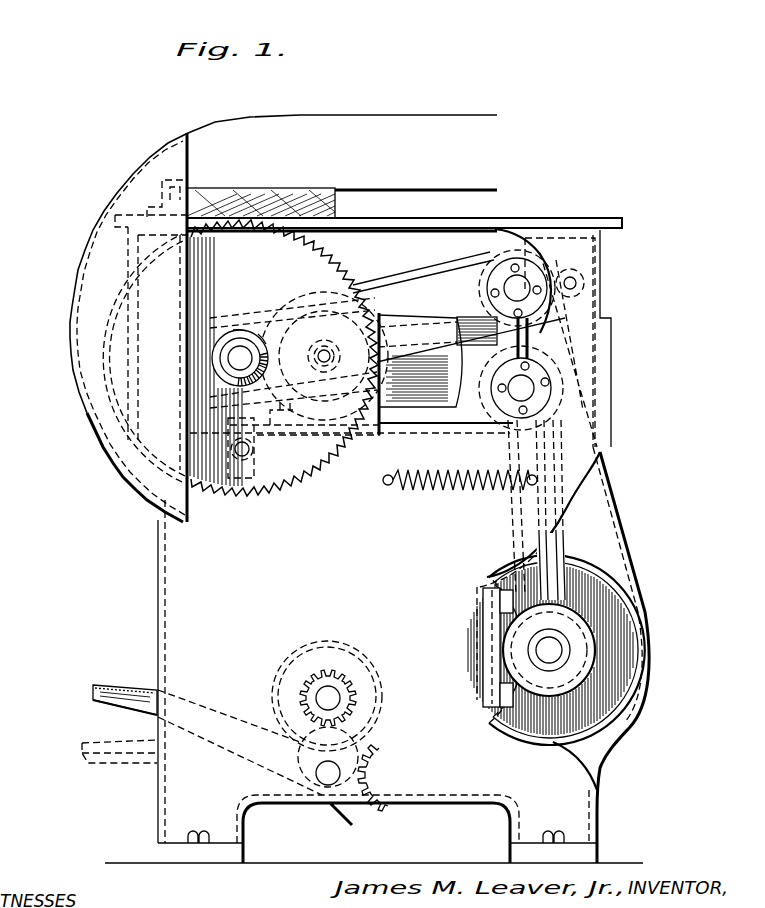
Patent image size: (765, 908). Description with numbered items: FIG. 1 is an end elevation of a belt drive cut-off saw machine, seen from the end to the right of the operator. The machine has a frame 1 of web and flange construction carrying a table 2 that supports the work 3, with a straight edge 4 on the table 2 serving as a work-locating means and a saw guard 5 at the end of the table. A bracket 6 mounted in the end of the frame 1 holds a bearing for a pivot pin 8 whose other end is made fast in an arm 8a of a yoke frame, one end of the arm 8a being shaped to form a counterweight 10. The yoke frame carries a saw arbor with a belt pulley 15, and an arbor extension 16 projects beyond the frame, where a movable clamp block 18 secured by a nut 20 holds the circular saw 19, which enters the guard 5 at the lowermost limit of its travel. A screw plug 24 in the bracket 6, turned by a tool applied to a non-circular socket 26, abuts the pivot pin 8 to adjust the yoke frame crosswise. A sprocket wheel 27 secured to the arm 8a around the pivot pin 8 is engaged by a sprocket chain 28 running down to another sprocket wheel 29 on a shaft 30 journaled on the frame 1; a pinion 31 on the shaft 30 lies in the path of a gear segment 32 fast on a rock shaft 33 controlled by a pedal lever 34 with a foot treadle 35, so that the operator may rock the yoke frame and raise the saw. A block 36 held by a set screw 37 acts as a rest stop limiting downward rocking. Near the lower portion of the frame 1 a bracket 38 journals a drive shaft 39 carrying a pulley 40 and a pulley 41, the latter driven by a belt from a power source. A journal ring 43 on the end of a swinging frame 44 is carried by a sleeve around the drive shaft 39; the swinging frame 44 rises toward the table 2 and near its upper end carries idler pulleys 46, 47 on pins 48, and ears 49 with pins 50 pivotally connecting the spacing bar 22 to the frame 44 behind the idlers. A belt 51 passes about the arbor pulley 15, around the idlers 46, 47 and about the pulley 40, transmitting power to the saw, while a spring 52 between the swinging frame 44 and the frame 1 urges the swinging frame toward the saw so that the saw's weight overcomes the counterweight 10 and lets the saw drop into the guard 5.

The frame 1 is at (157, 566).
The table 2 is at (592, 218).
The work 3 is at (291, 210).
The straight edge 4 is at (389, 843).
The saw guard 5 is at (77, 248).
The bracket 6 is at (367, 433).
The pivot pin 8 is at (330, 353).
The arm of yoke frame 8a is at (272, 312).
The counterweight 10 is at (429, 317).
The belt pulley 15 is at (262, 333).
The arbor extension 16 is at (234, 330).
The movable clamp block 18 is at (218, 372).
The circular saw 19 is at (306, 486).
The nut 20 is at (222, 356).
The spacing bar 22 is at (470, 320).
The screw plug 24 is at (318, 352).
The non-circular socket 26 is at (321, 365).
The sprocket wheel 27 is at (327, 412).
The sprocket chain 28 is at (385, 403).
The sprocket wheel 29 is at (300, 648).
The shaft 30 is at (323, 697).
The pinion 31 is at (357, 700).
The gear segment 32 is at (385, 776).
The rock shaft 33 is at (325, 773).
The pedal lever 34 is at (210, 742).
The foot treadle 35 is at (130, 695).
The block 36 is at (232, 474).
The set screw 37 is at (253, 449).
The bracket 38 is at (495, 650).
The drive shaft 39 is at (552, 650).
The pulley 40 is at (610, 697).
The pulley 41 is at (593, 638).
The journal ring 43 is at (580, 667).
The swinging frame 44 is at (555, 541).
The idler pulley 46 is at (493, 262).
The idler pulley 47 is at (507, 412).
The pin 48 is at (514, 290).
The ear 49 is at (564, 270).
The pin 50 is at (578, 285).
The belt 51 is at (615, 505).
The spring 52 is at (455, 488).